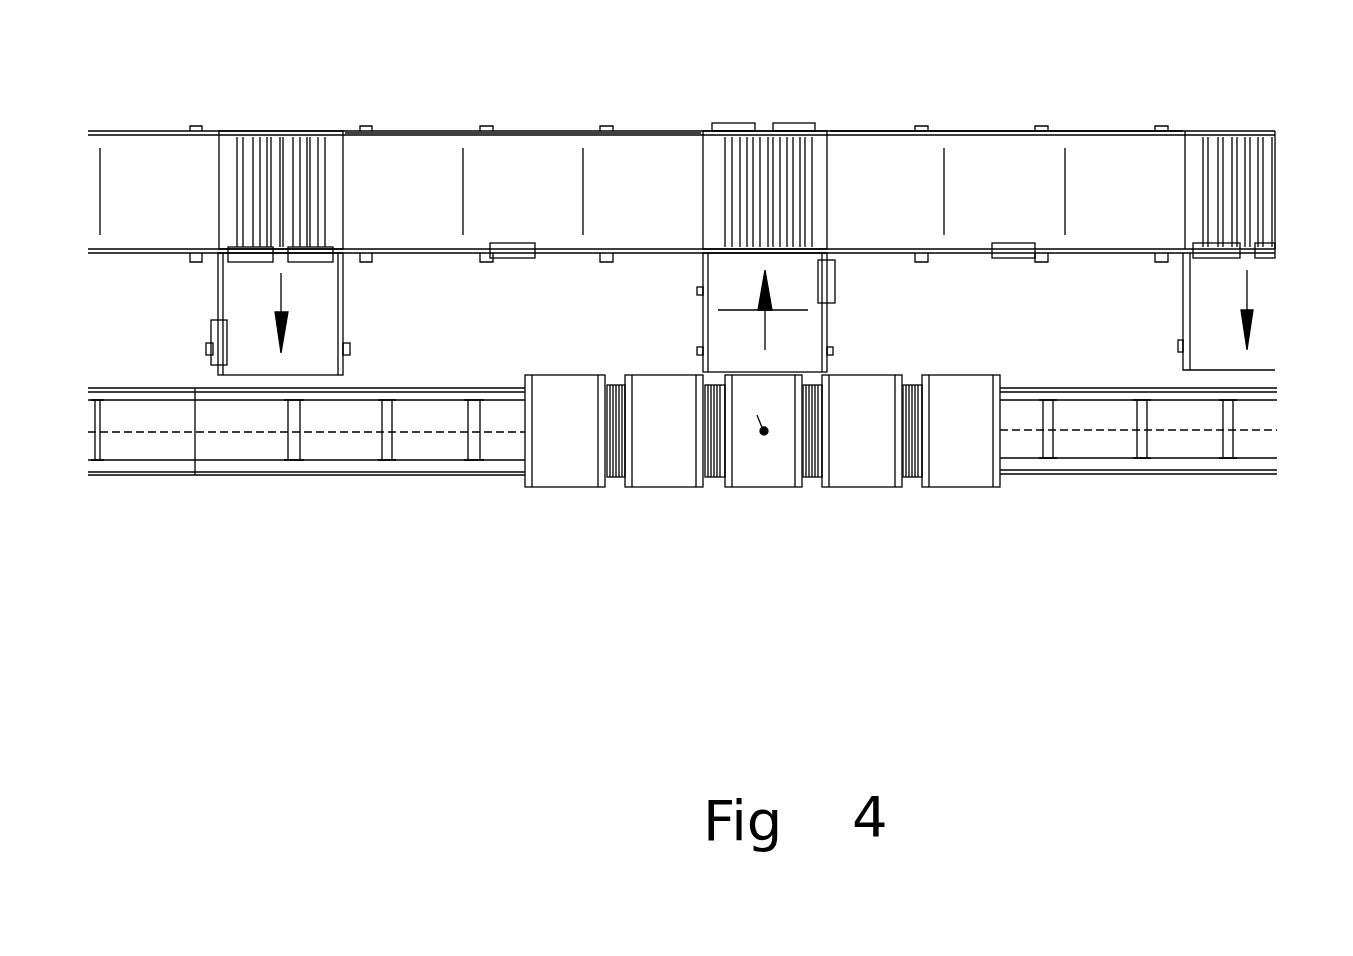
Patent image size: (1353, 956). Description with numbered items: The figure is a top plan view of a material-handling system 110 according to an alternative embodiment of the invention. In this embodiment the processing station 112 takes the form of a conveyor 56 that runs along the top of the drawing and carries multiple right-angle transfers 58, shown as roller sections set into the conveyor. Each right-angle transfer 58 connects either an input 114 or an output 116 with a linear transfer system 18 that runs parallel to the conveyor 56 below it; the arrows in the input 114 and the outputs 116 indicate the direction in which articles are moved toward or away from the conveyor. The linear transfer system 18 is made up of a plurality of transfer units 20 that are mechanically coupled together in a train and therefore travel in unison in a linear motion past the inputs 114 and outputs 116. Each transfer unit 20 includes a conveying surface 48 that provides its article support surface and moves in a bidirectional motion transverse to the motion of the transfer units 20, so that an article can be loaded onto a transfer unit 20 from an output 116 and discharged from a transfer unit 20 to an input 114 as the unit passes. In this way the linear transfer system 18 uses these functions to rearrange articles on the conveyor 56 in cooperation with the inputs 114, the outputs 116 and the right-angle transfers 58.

The linear transfer system 18 is at (1150, 470).
The transfer unit 20 is at (585, 487).
The conveying surface 48 is at (762, 431).
The conveyor 56 is at (517, 132).
The right-angle transfer 58 is at (263, 131).
The material-handling system 110 is at (960, 78).
The processing station 112 is at (1076, 128).
The input 114 is at (830, 318).
The output 116 is at (343, 305).